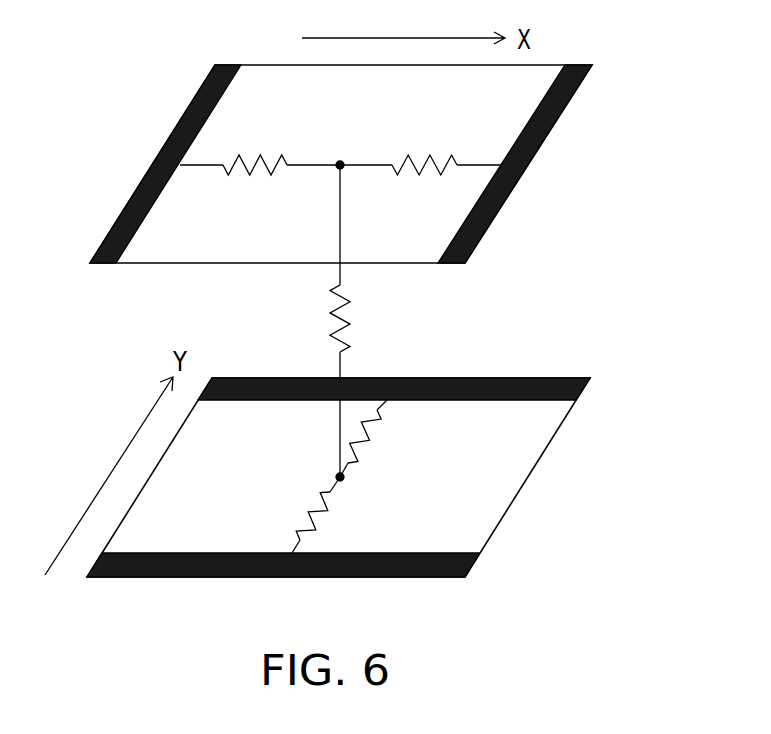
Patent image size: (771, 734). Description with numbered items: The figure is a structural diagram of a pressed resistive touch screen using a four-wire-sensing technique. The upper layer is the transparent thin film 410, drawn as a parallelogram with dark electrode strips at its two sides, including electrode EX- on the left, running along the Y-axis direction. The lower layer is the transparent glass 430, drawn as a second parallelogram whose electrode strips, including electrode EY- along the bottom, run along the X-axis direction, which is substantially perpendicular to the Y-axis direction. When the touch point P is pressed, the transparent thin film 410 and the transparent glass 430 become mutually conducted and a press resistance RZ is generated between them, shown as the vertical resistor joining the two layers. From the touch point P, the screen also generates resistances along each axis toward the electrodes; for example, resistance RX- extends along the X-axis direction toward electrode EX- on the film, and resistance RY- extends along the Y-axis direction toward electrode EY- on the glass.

The transparent thin film 410 is at (364, 139).
The transparent glass 430 is at (374, 485).
The electrode EX− EX- is at (160, 148).
The electrode EY− EY- is at (405, 576).
The touch point P is at (340, 147).
The resistance RX− RX- is at (260, 144).
The press resistance RZ is at (361, 323).
The resistance RY− RY- is at (329, 515).